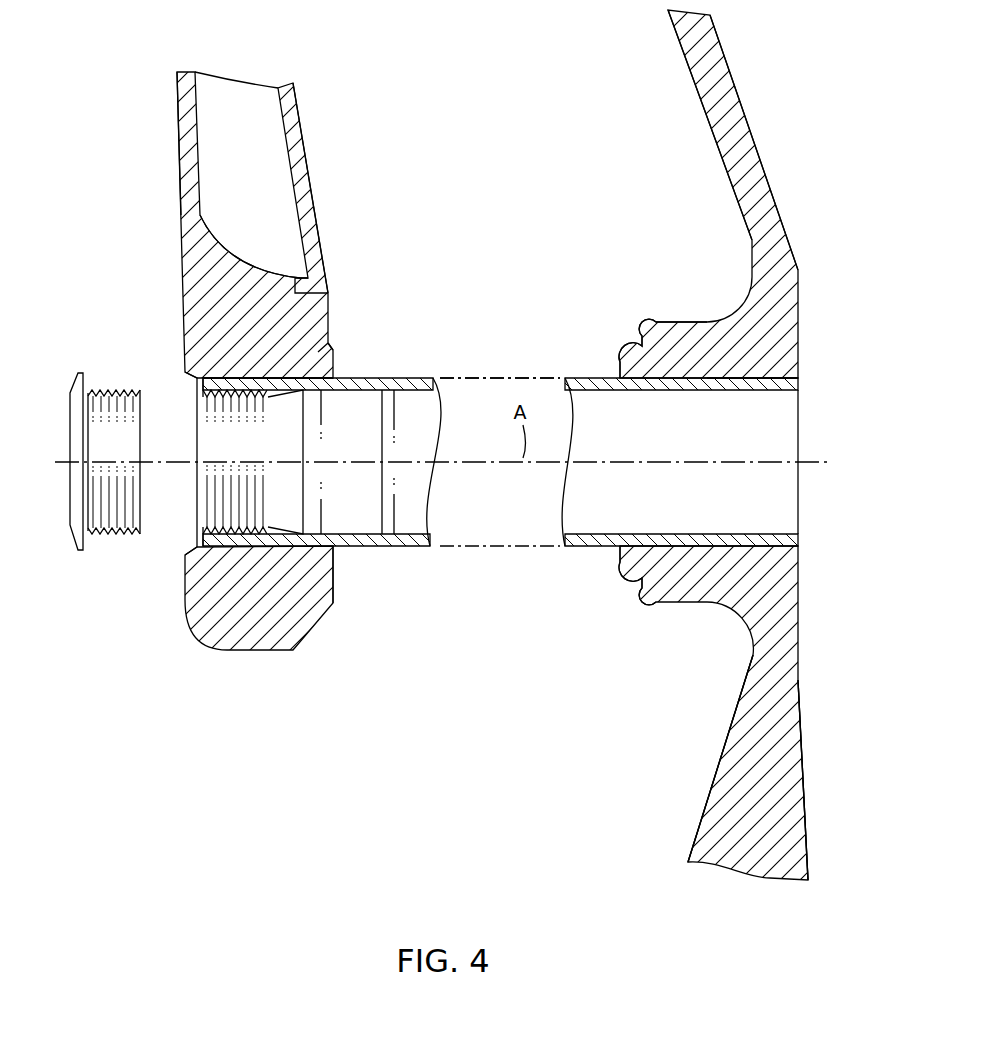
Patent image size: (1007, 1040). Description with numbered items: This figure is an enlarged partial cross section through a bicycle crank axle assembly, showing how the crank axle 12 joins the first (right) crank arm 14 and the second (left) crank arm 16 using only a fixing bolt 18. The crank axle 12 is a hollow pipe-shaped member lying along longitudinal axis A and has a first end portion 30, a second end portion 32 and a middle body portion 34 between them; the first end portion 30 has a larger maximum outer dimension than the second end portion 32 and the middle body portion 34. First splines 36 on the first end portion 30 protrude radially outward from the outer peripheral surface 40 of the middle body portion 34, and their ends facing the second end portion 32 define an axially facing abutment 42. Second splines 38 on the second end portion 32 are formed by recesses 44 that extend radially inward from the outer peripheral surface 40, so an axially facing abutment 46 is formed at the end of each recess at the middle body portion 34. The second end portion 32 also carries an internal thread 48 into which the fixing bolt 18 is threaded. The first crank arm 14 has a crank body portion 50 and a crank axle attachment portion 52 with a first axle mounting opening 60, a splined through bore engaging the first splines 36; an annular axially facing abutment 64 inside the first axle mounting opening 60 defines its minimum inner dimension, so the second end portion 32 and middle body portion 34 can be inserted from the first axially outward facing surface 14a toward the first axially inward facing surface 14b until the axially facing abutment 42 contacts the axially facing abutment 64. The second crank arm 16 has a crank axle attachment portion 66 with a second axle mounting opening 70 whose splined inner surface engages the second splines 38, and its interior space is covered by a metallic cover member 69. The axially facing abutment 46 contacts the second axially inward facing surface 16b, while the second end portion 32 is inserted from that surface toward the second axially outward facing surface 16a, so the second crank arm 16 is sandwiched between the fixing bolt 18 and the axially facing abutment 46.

The crank axle 12 is at (434, 355).
The first crank arm 14 is at (807, 745).
The first axially outward facing surface 14a is at (808, 838).
The first axially inward facing surface 14b is at (705, 812).
The second crank arm 16 is at (181, 177).
The second axially outward facing surface 16a is at (182, 228).
The second axially inward facing surface 16b is at (322, 240).
The fixing bolt 18 is at (69, 390).
The first end portion 30 is at (758, 364).
The second end portion 32 is at (249, 373).
The middle body portion 34 is at (408, 548).
The first splines 36 is at (698, 374).
The second splines 38 is at (216, 531).
The outer peripheral surface 40 is at (586, 547).
The axially facing abutment 42 is at (620, 374).
The recesses 44 is at (300, 553).
The axially facing abutment 46 is at (318, 350).
The internal thread 48 is at (222, 421).
The crank body portion 50 is at (732, 736).
The crank axle attachment portion 52 is at (798, 298).
The first axle mounting opening 60 is at (723, 392).
The axially facing abutment 64 is at (628, 542).
The crank axle attachment portion 66 is at (213, 622).
The metallic cover member 69 is at (301, 177).
The second axle mounting opening 70 is at (235, 535).